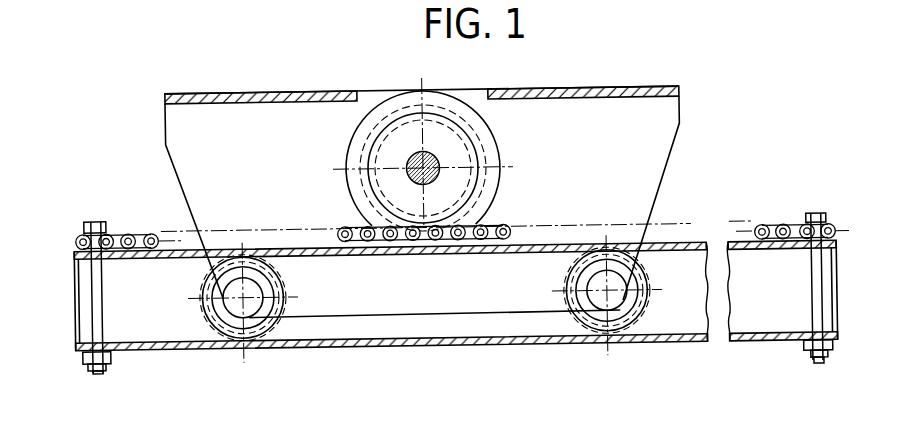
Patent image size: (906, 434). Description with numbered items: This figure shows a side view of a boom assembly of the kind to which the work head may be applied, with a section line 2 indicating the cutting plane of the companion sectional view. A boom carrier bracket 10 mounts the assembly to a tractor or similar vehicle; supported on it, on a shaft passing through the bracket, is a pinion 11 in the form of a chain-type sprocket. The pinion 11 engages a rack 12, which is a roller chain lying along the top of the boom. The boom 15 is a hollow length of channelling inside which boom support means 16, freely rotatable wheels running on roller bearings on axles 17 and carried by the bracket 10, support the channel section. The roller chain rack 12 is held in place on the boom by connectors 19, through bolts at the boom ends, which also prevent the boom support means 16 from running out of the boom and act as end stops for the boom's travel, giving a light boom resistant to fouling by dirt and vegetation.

The section line 2- 2 is at (126, 220).
The boom carrier bracket 10 is at (215, 89).
The pinion 11 is at (416, 97).
The rack 12 is at (772, 218).
The boom 15 is at (360, 346).
The boom support means 16 is at (575, 326).
The axle 17 is at (616, 313).
The connector 19 is at (820, 211).